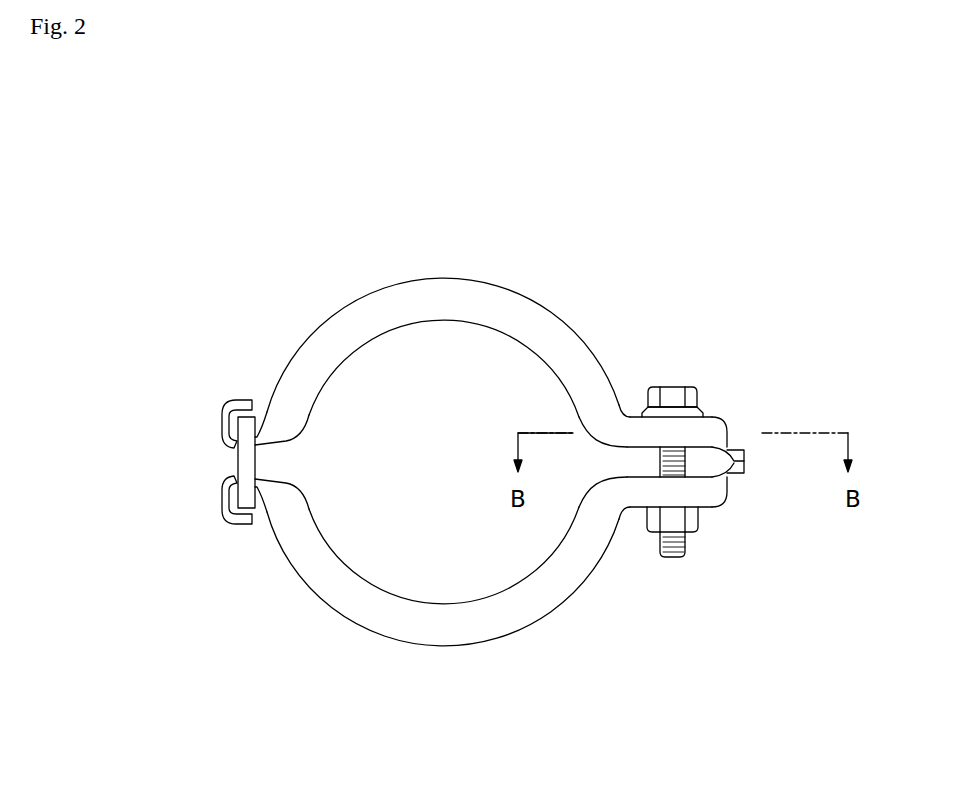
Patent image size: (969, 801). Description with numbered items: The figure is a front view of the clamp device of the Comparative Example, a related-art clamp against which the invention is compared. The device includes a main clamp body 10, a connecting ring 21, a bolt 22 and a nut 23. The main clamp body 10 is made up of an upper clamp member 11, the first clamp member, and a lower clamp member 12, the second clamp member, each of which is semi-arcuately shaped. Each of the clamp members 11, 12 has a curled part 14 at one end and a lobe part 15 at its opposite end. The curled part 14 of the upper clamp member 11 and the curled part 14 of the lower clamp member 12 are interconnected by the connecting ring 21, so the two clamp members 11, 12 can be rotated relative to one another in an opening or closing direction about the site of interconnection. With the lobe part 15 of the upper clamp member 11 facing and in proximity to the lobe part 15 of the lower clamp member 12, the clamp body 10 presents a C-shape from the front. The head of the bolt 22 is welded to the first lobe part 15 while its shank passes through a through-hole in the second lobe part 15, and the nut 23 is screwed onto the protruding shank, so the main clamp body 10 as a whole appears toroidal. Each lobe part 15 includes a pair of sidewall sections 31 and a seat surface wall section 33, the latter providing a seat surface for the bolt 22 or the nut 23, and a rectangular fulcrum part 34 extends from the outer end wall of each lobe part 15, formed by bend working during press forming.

The main clamp body 10 is at (437, 468).
The upper clamp member 11 is at (444, 278).
The lower clamp member 12 is at (440, 648).
The curled part 14 is at (226, 406).
The lobe part 15 is at (711, 417).
The connecting ring 21 is at (245, 467).
The bolt 22 is at (672, 390).
The nut 23 is at (653, 527).
The sidewall section 31 is at (681, 430).
The seat surface wall section 33 is at (628, 413).
The fulcrum part 34 is at (745, 452).